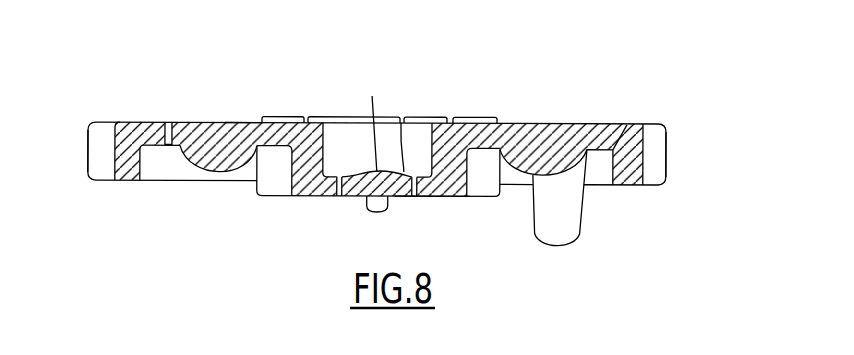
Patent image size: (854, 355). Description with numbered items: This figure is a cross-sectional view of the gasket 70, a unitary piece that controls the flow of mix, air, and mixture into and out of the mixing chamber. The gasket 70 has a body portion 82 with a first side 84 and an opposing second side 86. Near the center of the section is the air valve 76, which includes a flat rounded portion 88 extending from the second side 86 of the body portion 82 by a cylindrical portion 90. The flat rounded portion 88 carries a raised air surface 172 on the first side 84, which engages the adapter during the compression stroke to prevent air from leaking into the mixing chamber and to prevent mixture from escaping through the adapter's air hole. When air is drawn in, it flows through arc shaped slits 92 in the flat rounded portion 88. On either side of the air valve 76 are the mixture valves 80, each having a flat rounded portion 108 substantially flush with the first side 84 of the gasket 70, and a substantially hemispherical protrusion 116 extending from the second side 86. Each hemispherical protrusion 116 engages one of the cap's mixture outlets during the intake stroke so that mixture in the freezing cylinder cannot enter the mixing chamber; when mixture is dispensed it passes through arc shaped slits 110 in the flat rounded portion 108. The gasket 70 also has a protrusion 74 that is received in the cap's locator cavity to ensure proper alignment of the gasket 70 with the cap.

The gasket 70 is at (693, 110).
The protrusion 74 is at (555, 222).
The air valve 76 is at (438, 195).
The mixture valves 80 is at (192, 122).
The body portion 82 is at (590, 122).
The first side 84 is at (148, 122).
The second side 86 is at (155, 147).
The flat rounded portion 88 is at (401, 122).
The cylindrical portion 90 is at (333, 137).
The arc shaped slits 92 is at (340, 195).
The flat rounded portion 108 is at (228, 122).
The arc shaped slits 110 is at (166, 121).
The hemispherical protrusion 116 is at (228, 180).
The raised air surface 172 is at (372, 95).